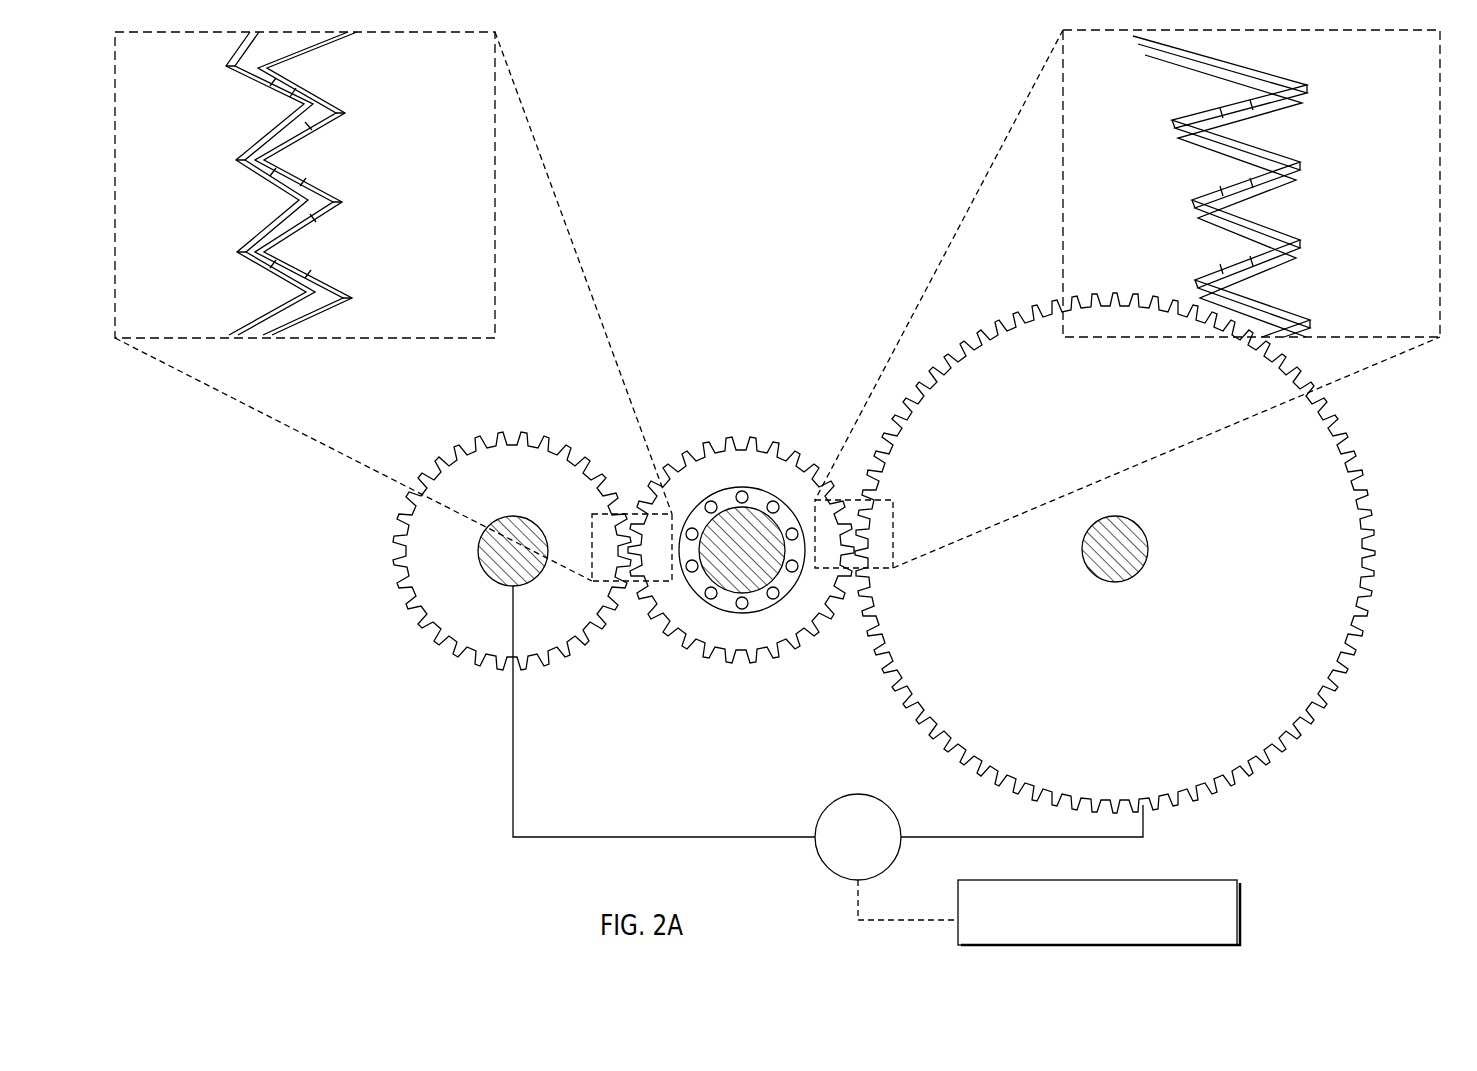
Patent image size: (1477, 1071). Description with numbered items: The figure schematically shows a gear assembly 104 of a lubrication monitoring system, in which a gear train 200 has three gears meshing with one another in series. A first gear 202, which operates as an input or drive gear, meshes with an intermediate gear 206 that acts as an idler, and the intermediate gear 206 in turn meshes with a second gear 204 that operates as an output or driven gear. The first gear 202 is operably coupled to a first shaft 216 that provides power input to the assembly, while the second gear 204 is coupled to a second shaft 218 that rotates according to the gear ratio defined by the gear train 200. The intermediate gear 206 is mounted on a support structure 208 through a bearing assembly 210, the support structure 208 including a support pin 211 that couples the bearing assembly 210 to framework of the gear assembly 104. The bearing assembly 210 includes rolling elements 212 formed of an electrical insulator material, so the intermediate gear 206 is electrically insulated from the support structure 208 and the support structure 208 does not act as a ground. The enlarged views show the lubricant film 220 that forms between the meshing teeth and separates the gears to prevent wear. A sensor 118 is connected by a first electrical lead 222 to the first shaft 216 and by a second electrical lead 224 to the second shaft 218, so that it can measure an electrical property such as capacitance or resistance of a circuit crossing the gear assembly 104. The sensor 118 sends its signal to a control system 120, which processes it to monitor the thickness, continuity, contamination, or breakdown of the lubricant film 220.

The gear assembly 104 is at (862, 104).
The gear train 200 is at (750, 228).
The first gear 202 is at (423, 530).
The second gear 204 is at (1313, 480).
The intermediate gear 206 is at (757, 632).
The support structure 208 is at (712, 490).
The support pin 211 is at (738, 546).
The bearing assembly 210 is at (749, 494).
The rolling elements 212 is at (786, 508).
The first shaft 216 is at (493, 548).
The second shaft 218 is at (1130, 548).
The lubricant film 220 is at (300, 290).
The first electrical lead 222 is at (690, 837).
The second electrical lead 224 is at (940, 837).
The sensor 118 is at (876, 853).
The control system 120 is at (1168, 880).